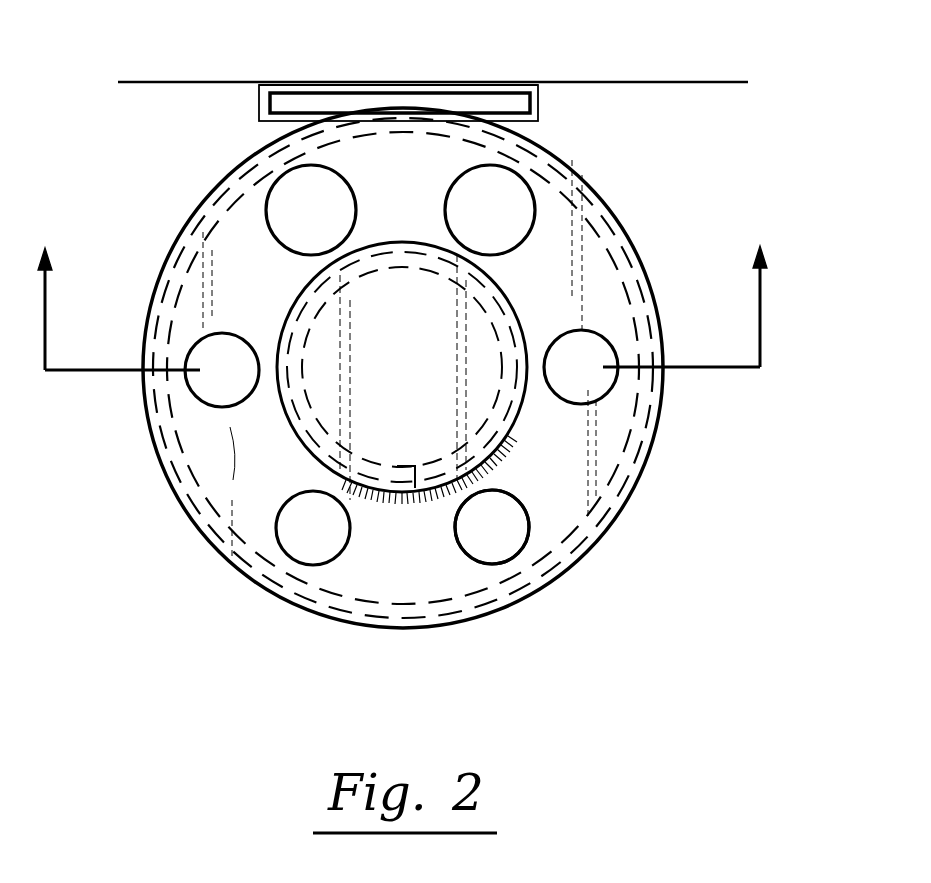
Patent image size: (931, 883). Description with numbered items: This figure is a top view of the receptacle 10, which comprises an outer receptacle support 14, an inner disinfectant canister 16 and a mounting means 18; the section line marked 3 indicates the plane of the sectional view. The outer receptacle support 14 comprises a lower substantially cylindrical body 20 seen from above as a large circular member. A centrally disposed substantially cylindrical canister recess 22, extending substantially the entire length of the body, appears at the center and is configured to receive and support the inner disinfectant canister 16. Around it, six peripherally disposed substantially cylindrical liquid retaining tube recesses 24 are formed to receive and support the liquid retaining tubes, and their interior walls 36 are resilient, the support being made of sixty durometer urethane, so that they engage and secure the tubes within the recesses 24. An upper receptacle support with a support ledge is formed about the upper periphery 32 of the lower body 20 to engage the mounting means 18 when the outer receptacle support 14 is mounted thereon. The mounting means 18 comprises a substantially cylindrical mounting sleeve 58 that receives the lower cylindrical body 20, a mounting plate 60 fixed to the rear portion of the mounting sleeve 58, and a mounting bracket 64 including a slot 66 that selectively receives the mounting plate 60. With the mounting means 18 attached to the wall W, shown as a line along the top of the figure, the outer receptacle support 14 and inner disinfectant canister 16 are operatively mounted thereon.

The receptacle 10 is at (585, 651).
The outer receptacle support 14 is at (657, 237).
The inner disinfectant canister 16 is at (544, 270).
The mounting means 18 is at (608, 159).
The lower substantially cylindrical body 20 is at (229, 492).
The centrally disposed substantially cylindrical canister recess 22 is at (412, 515).
The peripherally disposed substantially cylindrical liquid retaining tube recesses 24 is at (274, 196).
The upper periphery 32 is at (490, 431).
The interior walls of the liquid tube recesses 36 is at (527, 523).
The substantially cylindrical mounting sleeve 58 is at (670, 425).
The mounting plate 60 is at (482, 100).
The mounting bracket 64 is at (536, 106).
The slot 66 is at (298, 97).
The wall W is at (692, 83).
The section line 3- 3 is at (423, 308).